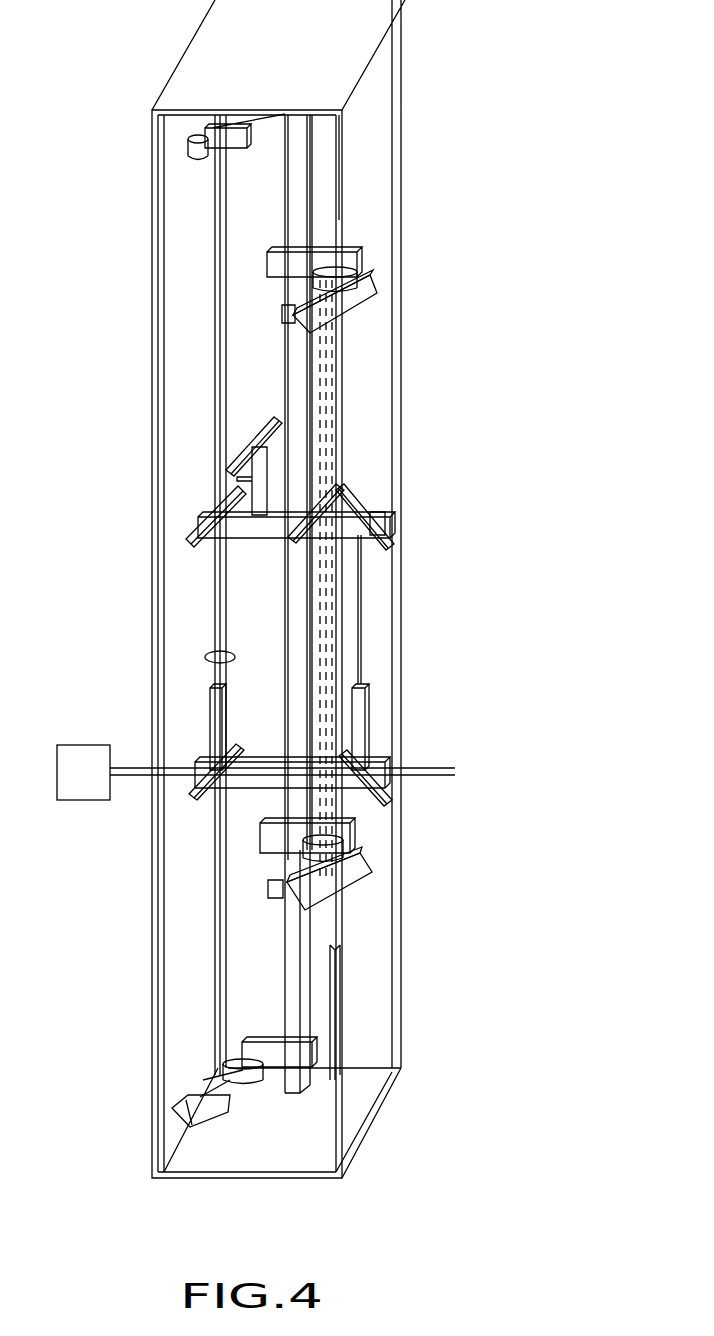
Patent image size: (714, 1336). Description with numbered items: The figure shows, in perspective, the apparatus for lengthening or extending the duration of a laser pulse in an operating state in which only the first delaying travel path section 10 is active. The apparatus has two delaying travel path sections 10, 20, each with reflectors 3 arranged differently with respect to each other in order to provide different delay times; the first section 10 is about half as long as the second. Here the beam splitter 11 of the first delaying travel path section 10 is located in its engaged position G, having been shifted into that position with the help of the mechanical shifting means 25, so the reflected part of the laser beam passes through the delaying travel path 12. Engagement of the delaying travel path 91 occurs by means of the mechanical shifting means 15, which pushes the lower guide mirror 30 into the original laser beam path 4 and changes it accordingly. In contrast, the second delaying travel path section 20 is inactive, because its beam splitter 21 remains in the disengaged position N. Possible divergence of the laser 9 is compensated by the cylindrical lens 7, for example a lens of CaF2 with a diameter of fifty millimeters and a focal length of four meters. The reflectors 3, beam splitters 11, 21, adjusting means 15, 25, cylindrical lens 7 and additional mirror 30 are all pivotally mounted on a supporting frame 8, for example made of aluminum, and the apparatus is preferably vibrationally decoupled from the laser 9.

The reflectors 3 is at (276, 620).
The original laser beam path 4 is at (270, 811).
The cylindrical lens 7 is at (175, 636).
The supporting frame 8 is at (242, 604).
The laser 9 is at (98, 789).
The first delaying travel path section 10 is at (385, 368).
The beam splitter 11 is at (394, 514).
The delaying travel path 12 is at (389, 497).
The mechanical shifting means 15 is at (269, 652).
The second delaying travel path section 20 is at (277, 226).
The beam splitter 21 is at (168, 450).
The mechanical shifting means 25 is at (174, 492).
The guide mirror 30 is at (289, 691).
The delaying travel path 91 is at (122, 611).